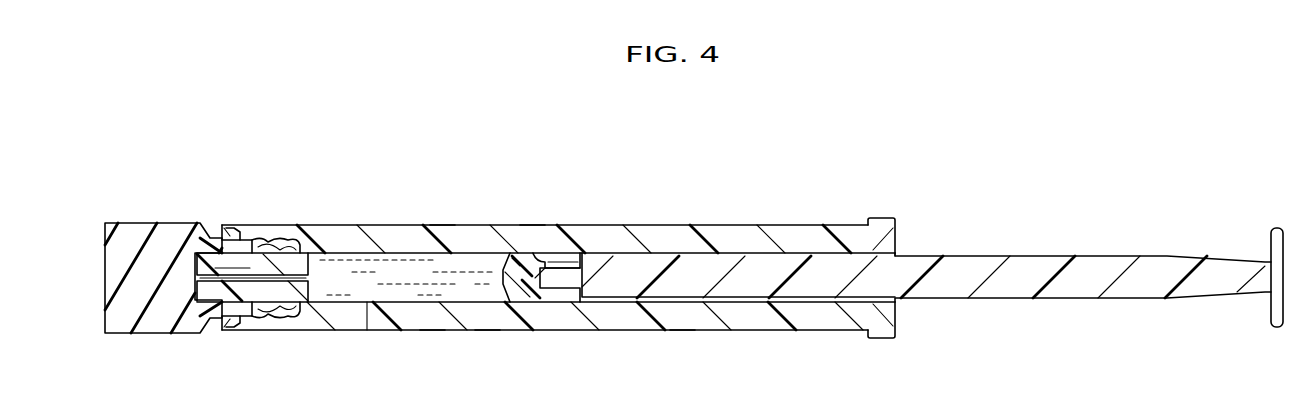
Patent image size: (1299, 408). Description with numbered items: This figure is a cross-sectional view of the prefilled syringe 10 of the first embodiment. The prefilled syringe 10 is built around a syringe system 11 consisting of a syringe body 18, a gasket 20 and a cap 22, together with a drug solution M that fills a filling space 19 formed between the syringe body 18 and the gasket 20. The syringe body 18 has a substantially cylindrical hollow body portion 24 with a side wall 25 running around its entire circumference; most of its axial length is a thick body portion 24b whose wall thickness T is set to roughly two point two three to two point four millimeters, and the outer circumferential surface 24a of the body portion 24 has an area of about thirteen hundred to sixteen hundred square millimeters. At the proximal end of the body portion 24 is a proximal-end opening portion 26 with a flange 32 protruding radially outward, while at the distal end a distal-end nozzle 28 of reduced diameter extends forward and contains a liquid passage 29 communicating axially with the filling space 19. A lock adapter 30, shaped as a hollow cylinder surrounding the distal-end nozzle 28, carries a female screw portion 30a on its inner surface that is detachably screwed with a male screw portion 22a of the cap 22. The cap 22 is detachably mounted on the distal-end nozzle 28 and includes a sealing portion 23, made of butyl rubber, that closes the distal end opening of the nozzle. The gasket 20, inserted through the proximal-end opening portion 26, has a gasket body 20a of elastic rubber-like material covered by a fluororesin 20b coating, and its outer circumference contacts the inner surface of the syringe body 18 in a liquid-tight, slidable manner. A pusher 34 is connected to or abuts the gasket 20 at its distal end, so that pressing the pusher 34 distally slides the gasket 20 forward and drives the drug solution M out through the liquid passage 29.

The prefilled syringe 10 is at (633, 131).
The syringe system 11 is at (799, 210).
The syringe body 18 is at (538, 216).
The filling space 19 is at (342, 278).
The drug solution M is at (400, 260).
The gasket 20 is at (543, 316).
The gasket body 20a is at (553, 263).
The fluororesin 20b is at (527, 252).
The cap 22 is at (158, 212).
The male screw portion 22a is at (238, 325).
The sealing portion 23 is at (191, 270).
The body portion 24 is at (440, 237).
The outer circumferential surface 24a is at (681, 333).
The thick body portion 24b is at (433, 310).
The side wall 25 is at (487, 312).
The proximal-end opening portion 26 is at (897, 254).
The distal-end nozzle 28 is at (243, 264).
The liquid passage 29 is at (213, 277).
The lock adapter 30 is at (277, 323).
The female screw portion 30a is at (302, 237).
The flange 32 is at (879, 219).
The pusher 34 is at (1052, 246).
The wall thickness T is at (367, 285).